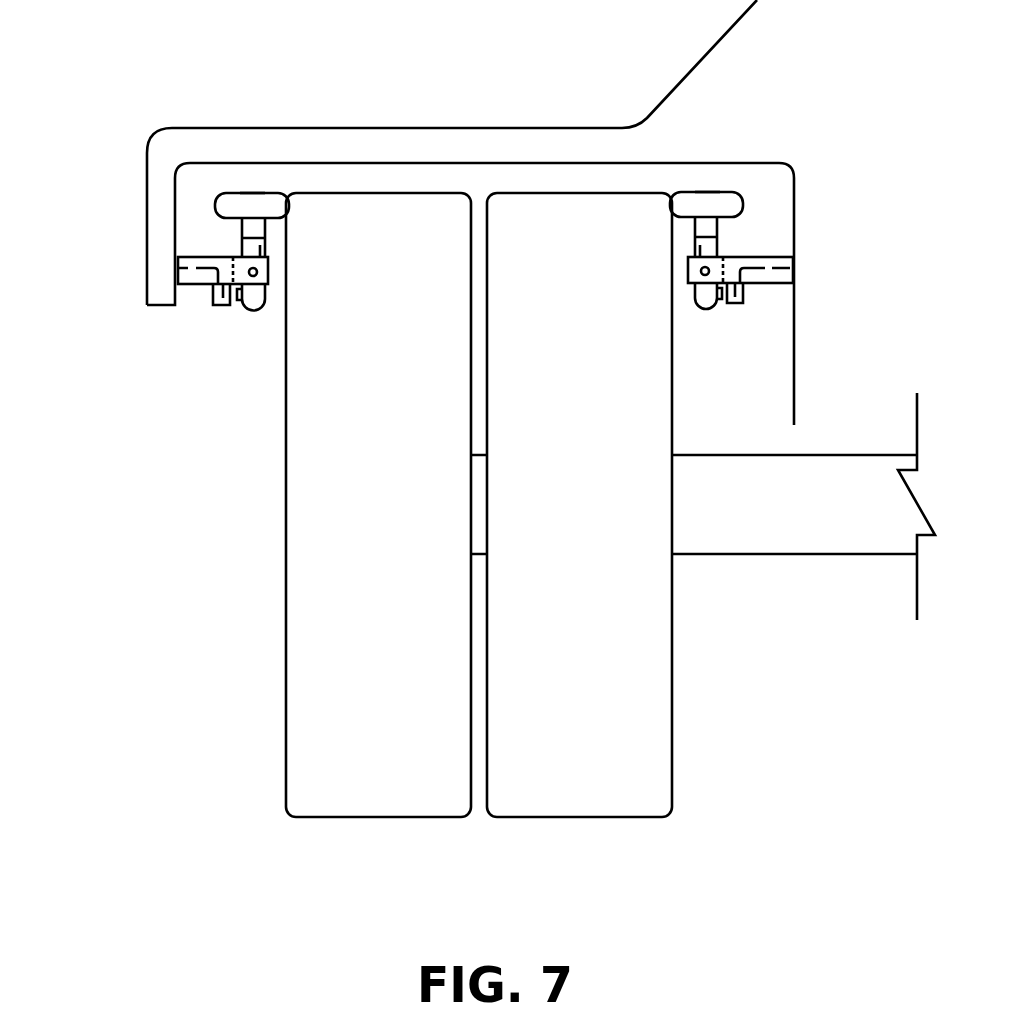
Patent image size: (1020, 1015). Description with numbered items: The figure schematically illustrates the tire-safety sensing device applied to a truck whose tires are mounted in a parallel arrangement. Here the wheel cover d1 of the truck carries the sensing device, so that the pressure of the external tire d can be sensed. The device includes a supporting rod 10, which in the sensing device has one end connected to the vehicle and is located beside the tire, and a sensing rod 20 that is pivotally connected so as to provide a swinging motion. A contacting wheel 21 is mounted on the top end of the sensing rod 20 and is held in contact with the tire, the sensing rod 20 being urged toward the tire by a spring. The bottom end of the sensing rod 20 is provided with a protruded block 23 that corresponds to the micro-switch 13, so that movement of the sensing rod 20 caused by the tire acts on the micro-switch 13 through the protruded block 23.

The supporting rod 10 is at (188, 287).
The micro-switch 13 is at (214, 308).
The sensing rod 20 is at (253, 300).
The contacting wheel 21 is at (283, 203).
The protruded block 23 is at (237, 308).
The external tire d is at (525, 802).
The wheel cover d1 is at (162, 210).